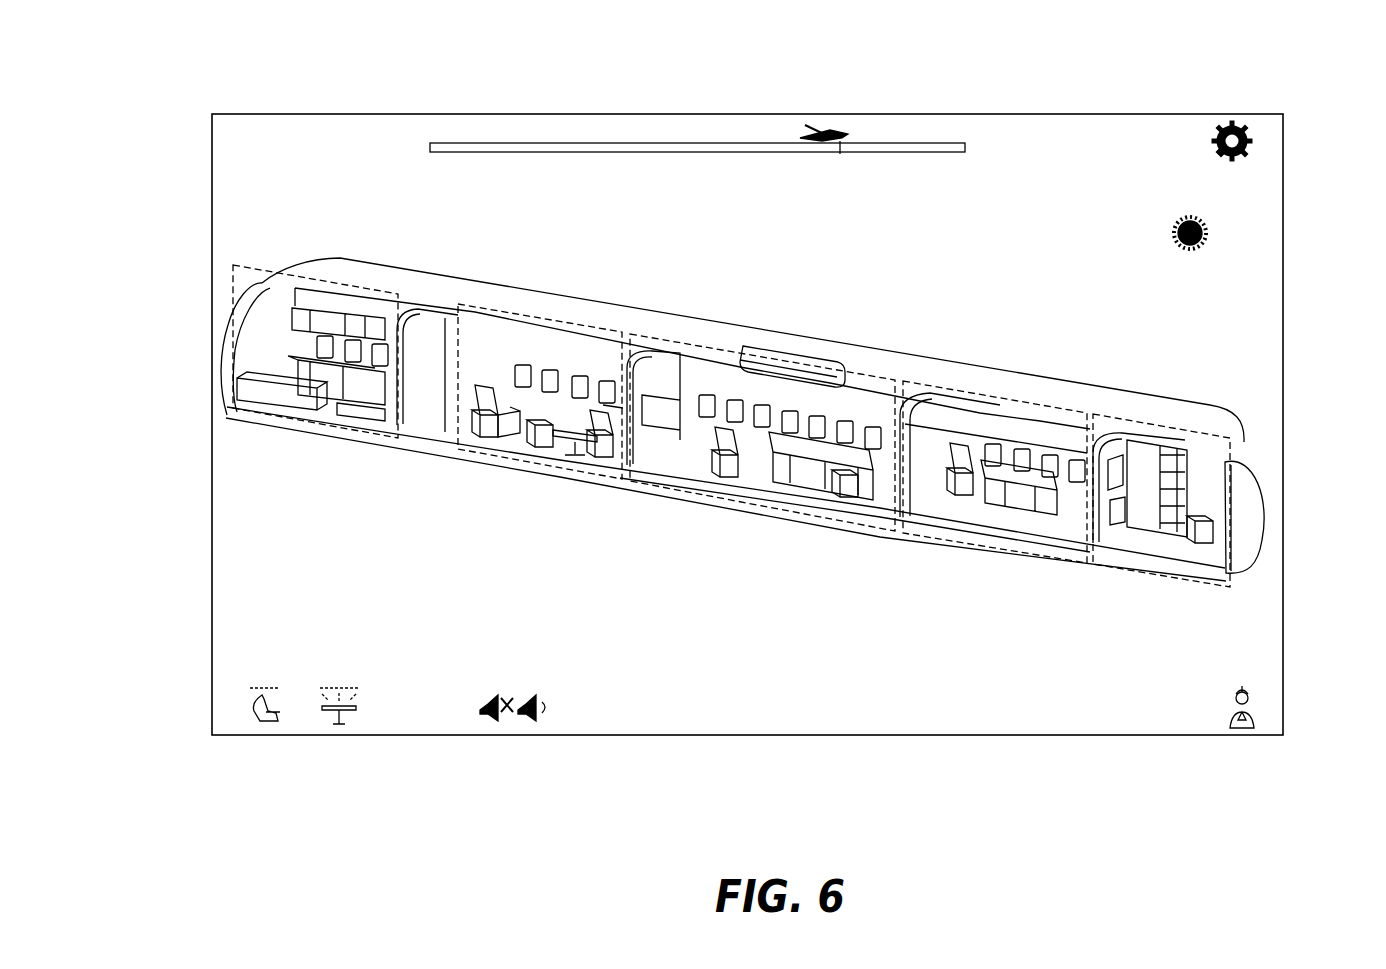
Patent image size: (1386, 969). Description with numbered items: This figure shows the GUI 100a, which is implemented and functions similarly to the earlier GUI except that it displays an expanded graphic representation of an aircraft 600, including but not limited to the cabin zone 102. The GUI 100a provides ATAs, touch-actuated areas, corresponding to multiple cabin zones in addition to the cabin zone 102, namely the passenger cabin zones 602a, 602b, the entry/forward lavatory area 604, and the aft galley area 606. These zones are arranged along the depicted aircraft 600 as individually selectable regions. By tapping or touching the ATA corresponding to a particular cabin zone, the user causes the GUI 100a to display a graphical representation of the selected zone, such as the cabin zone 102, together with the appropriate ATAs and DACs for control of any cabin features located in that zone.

The GUI 100a is at (138, 100).
The aircraft 600 is at (816, 756).
The cabin zone 102 is at (762, 503).
The passenger cabin zone 602a is at (995, 537).
The passenger cabin zone 602b is at (540, 463).
The entry/forward lavatory area 604 is at (1222, 507).
The aft galley area 606 is at (318, 422).